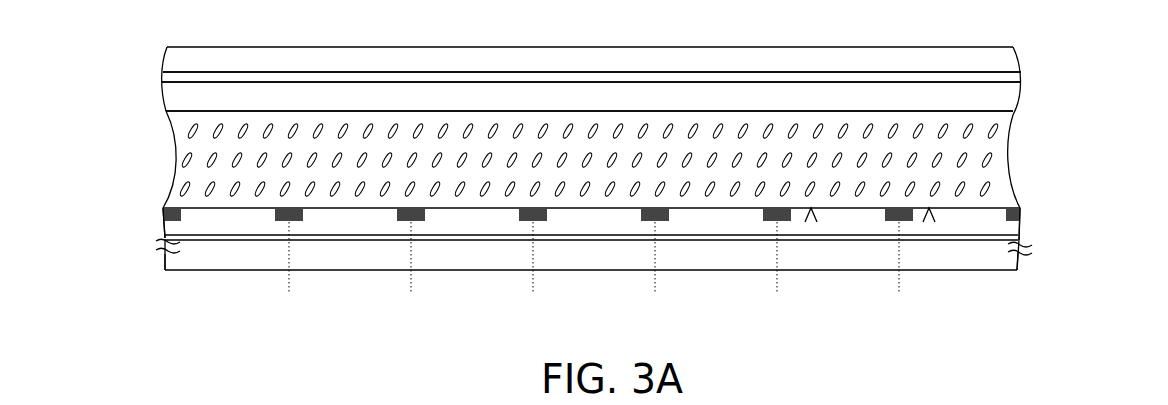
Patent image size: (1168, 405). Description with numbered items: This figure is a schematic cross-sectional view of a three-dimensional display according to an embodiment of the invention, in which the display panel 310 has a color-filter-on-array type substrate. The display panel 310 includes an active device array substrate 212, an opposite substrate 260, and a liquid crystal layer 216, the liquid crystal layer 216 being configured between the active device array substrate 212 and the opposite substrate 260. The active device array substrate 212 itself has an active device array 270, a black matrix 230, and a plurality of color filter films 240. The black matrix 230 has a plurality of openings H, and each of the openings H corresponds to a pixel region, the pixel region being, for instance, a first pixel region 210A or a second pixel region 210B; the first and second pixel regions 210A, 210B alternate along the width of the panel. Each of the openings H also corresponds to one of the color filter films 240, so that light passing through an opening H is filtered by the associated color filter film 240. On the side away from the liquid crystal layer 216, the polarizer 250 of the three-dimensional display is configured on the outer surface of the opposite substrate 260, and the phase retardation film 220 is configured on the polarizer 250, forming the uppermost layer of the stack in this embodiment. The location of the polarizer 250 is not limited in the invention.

The display panel 310 is at (87, 102).
The phase retardation film 220 is at (1013, 52).
The polarizer 250 is at (1013, 76).
The opposite substrate 260 is at (1013, 100).
The liquid crystal layer 216 is at (145, 113).
The black matrix 230 is at (1022, 215).
The color filter films 240 is at (1011, 238).
The active device array 270 is at (1020, 244).
The active device array substrate 212 is at (145, 207).
The first pixel region 210A is at (591, 265).
The second pixel region 210B is at (611, 265).
The openings H is at (811, 210).